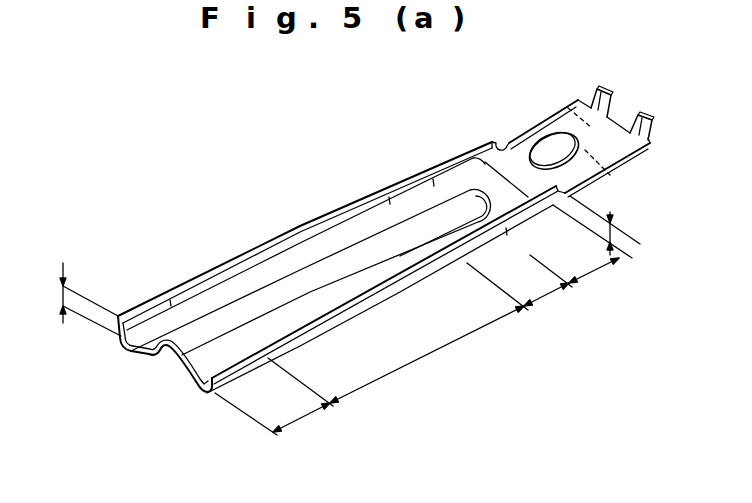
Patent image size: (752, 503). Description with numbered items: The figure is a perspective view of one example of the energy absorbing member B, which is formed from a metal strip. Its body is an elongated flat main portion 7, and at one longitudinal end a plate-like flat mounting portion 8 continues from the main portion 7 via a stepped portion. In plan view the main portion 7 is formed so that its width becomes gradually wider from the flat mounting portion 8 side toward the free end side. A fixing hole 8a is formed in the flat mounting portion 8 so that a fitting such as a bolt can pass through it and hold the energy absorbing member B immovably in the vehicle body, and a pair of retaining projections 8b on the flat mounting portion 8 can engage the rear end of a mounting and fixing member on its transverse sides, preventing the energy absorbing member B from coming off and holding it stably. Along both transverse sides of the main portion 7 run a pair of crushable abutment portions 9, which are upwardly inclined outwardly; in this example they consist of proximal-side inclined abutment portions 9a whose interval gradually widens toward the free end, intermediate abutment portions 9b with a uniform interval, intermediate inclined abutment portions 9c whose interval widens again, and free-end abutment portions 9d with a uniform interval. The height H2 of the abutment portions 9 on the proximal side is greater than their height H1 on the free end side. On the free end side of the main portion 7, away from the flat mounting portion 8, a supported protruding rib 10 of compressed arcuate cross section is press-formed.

The energy absorbing member B is at (246, 248).
The elongated flat main portion 7 is at (195, 379).
The flat mounting portion 8 is at (546, 134).
The fixing hole 8a is at (605, 137).
The retaining projections 8b is at (600, 90).
The crushable abutment portions 9 is at (328, 228).
The proximal-side inclined abutment portions 9a is at (609, 263).
The intermediate abutment portions 9b is at (557, 291).
The intermediate inclined abutment portions 9c is at (456, 340).
The free-end abutment portions 9d is at (305, 414).
The supported protruding rib 10 is at (197, 336).
The height of crushable abutment portions on free end side H1 is at (75, 299).
The height of crushable abutment portions on proximal side H2 is at (615, 249).